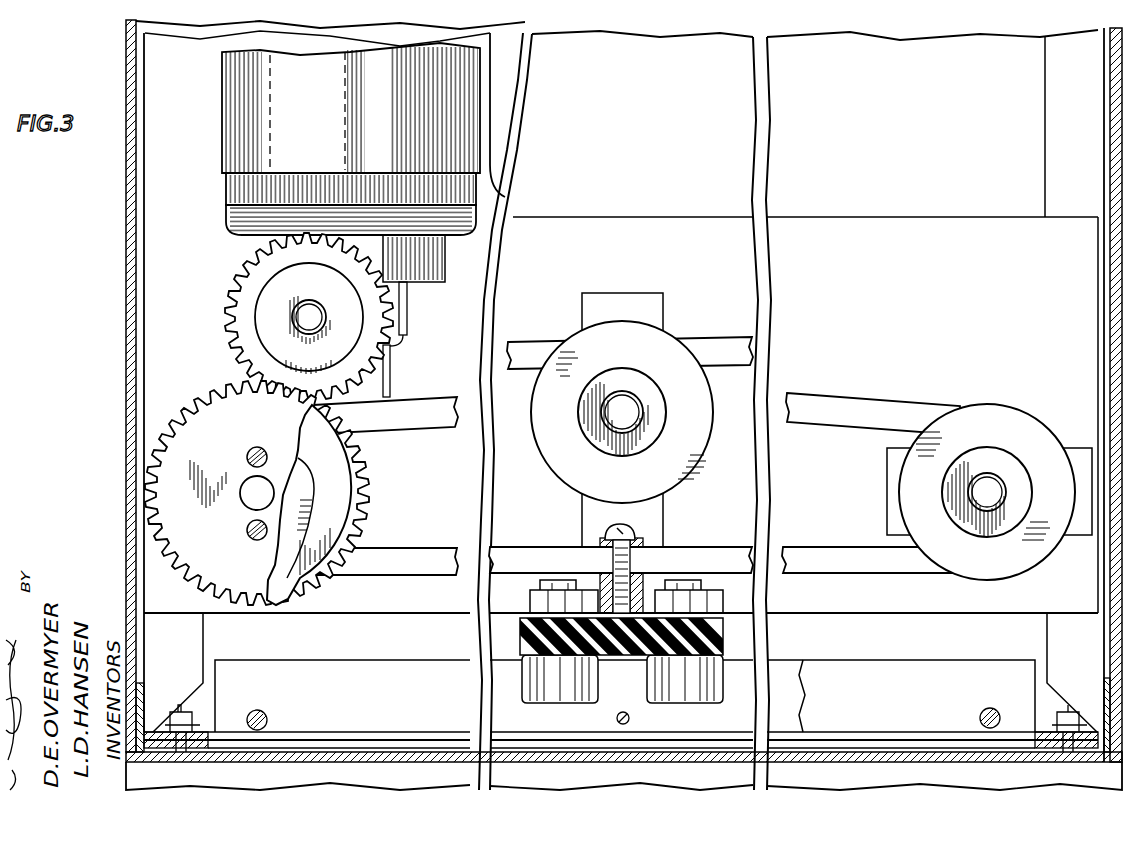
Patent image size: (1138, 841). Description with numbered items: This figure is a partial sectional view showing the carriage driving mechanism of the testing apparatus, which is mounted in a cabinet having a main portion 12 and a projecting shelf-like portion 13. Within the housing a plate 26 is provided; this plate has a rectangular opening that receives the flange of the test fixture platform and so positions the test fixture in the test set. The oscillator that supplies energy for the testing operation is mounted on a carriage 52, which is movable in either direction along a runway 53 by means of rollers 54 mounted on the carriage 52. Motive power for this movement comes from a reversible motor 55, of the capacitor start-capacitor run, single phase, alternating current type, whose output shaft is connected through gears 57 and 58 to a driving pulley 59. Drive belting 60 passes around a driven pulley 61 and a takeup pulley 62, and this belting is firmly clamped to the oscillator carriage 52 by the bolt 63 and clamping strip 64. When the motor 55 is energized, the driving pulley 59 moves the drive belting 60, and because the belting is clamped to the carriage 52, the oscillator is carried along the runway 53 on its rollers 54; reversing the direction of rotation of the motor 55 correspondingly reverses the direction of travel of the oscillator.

The main portion 12 is at (127, 364).
The projecting shelf-like portion 13 is at (128, 782).
The plate 26 is at (222, 776).
The carriage 52 is at (520, 633).
The runway 53 is at (789, 673).
The rollers 54 is at (554, 698).
The reversible motor 55 is at (230, 115).
The gear 57 is at (235, 290).
The gear 58 is at (214, 390).
The driving pulley 59 is at (338, 471).
The drive belting 60 is at (414, 556).
The driven pulley 61 is at (996, 410).
The takeup pulley 62 is at (688, 452).
The bolt 63 is at (605, 532).
The clamping strip 64 is at (645, 543).